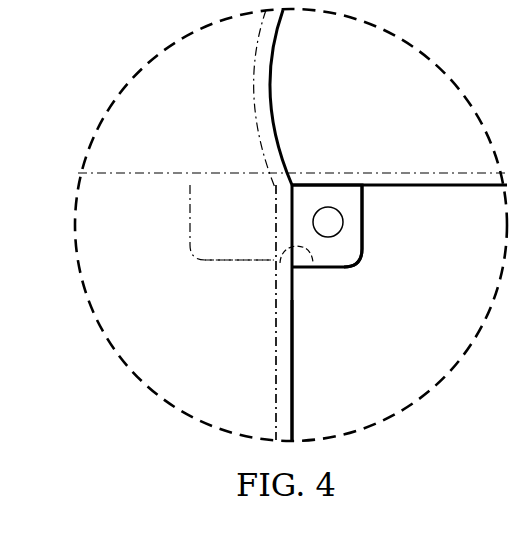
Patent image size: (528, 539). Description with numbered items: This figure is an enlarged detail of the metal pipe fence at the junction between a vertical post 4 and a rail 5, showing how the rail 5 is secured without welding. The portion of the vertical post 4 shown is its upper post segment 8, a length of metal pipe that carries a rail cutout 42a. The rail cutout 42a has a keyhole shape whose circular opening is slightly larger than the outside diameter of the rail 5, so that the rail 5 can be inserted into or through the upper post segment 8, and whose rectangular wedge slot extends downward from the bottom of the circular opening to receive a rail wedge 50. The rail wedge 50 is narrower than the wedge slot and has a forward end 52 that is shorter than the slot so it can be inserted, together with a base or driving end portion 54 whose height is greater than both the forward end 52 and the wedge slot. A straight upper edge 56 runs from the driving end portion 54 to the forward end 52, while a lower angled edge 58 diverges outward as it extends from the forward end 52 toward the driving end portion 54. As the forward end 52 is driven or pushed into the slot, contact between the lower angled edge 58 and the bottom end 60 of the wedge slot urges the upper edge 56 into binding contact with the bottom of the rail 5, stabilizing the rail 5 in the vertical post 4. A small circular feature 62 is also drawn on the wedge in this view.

The rail cutout 42a is at (262, 88).
The rail 5 is at (458, 190).
The vertical post 4 is at (296, 343).
The upper post segment 8 is at (294, 392).
The rail wedge 50 is at (340, 270).
The driving end portion 54 is at (362, 226).
The hole 62 is at (343, 227).
The forward end 52 is at (190, 215).
The lower angled edge 58 is at (223, 260).
The upper edge 56 is at (214, 185).
The bottom end of wedge slot 60 is at (313, 268).